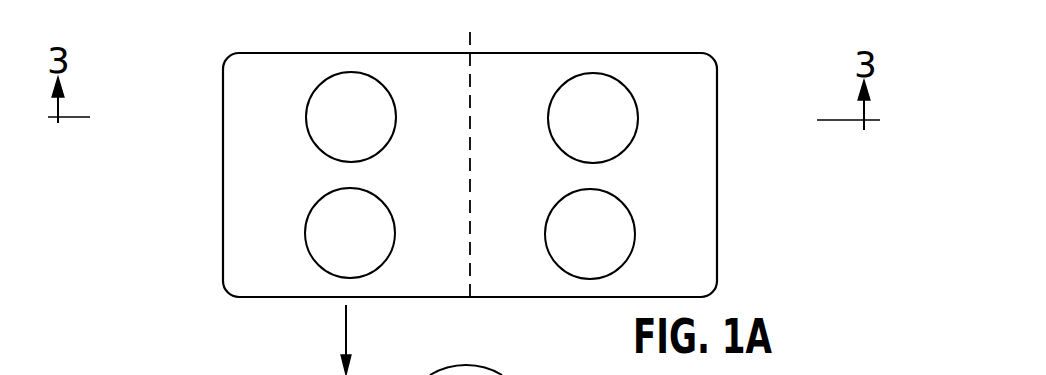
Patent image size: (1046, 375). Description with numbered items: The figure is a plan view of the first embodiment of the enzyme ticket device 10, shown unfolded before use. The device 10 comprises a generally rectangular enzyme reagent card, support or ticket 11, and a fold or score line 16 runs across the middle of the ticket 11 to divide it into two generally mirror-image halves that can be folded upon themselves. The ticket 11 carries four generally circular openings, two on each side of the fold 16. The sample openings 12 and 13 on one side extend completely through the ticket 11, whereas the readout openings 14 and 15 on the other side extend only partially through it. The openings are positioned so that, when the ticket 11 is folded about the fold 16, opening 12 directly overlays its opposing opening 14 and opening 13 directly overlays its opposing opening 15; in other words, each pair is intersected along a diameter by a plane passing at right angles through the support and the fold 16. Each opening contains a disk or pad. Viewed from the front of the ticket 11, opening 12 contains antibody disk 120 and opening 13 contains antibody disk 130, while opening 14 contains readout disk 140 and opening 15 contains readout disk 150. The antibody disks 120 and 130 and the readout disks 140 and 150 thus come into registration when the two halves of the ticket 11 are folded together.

The device 10 is at (664, 40).
The ticket 11 is at (716, 78).
The sample opening 12 is at (636, 98).
The sample opening 13 is at (635, 232).
The readout opening 14 is at (314, 91).
The readout opening 15 is at (308, 214).
The fold line 16 is at (458, 155).
The antibody disk 120 is at (617, 137).
The antibody disk 130 is at (613, 257).
The readout disk 140 is at (327, 137).
The readout disk 150 is at (330, 243).